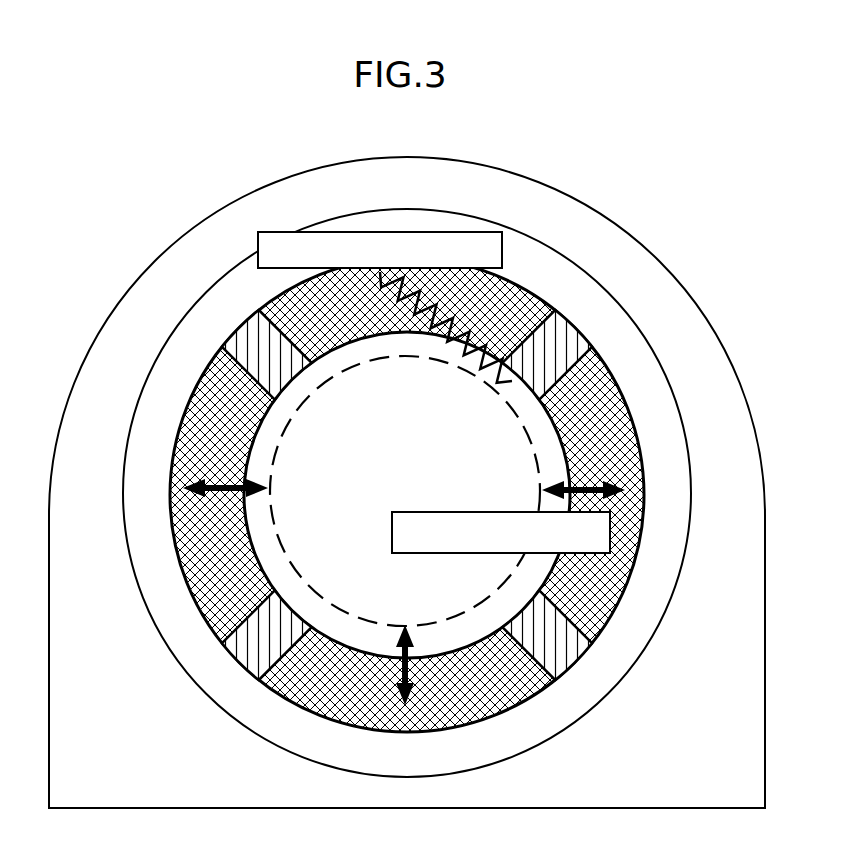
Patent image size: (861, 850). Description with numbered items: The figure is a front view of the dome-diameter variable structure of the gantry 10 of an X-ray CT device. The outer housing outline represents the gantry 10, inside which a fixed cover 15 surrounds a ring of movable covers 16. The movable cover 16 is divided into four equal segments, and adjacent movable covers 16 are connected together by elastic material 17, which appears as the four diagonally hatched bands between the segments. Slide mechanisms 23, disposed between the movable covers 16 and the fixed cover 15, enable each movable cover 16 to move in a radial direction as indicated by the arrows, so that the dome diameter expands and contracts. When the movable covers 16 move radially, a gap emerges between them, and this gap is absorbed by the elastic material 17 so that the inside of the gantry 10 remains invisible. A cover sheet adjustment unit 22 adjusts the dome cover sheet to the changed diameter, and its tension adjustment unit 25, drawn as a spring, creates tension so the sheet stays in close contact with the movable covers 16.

The gantry 10 is at (757, 356).
The fixed cover 15 is at (634, 348).
The movable cover 16 is at (612, 462).
The elastic material 17 is at (583, 641).
The cover sheet adjustment unit 22 is at (505, 235).
The slide mechanism 23 is at (437, 512).
The tension adjustment unit 25 is at (518, 290).